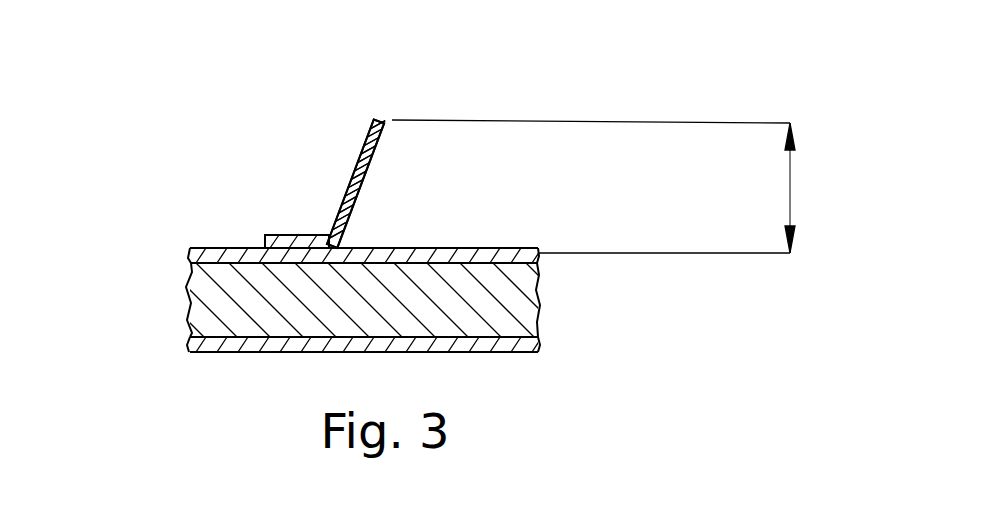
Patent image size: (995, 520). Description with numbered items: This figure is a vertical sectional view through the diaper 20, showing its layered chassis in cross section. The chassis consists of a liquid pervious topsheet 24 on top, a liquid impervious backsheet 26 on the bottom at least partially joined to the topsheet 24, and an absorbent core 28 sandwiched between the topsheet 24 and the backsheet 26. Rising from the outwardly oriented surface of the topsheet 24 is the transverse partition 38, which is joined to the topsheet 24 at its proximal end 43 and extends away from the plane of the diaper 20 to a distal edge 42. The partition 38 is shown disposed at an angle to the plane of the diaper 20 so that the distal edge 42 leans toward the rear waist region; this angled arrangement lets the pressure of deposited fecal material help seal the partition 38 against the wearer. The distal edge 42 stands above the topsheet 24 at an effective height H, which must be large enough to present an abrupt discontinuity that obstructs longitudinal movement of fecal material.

The diaper 20 is at (568, 298).
The liquid pervious topsheet 24 is at (190, 250).
The liquid impervious backsheet 26 is at (478, 355).
The absorbent core 28 is at (480, 317).
The transverse partition 38 is at (340, 192).
The distal edge 42 is at (375, 118).
The proximal end 43 is at (327, 237).
The effective height H is at (792, 182).